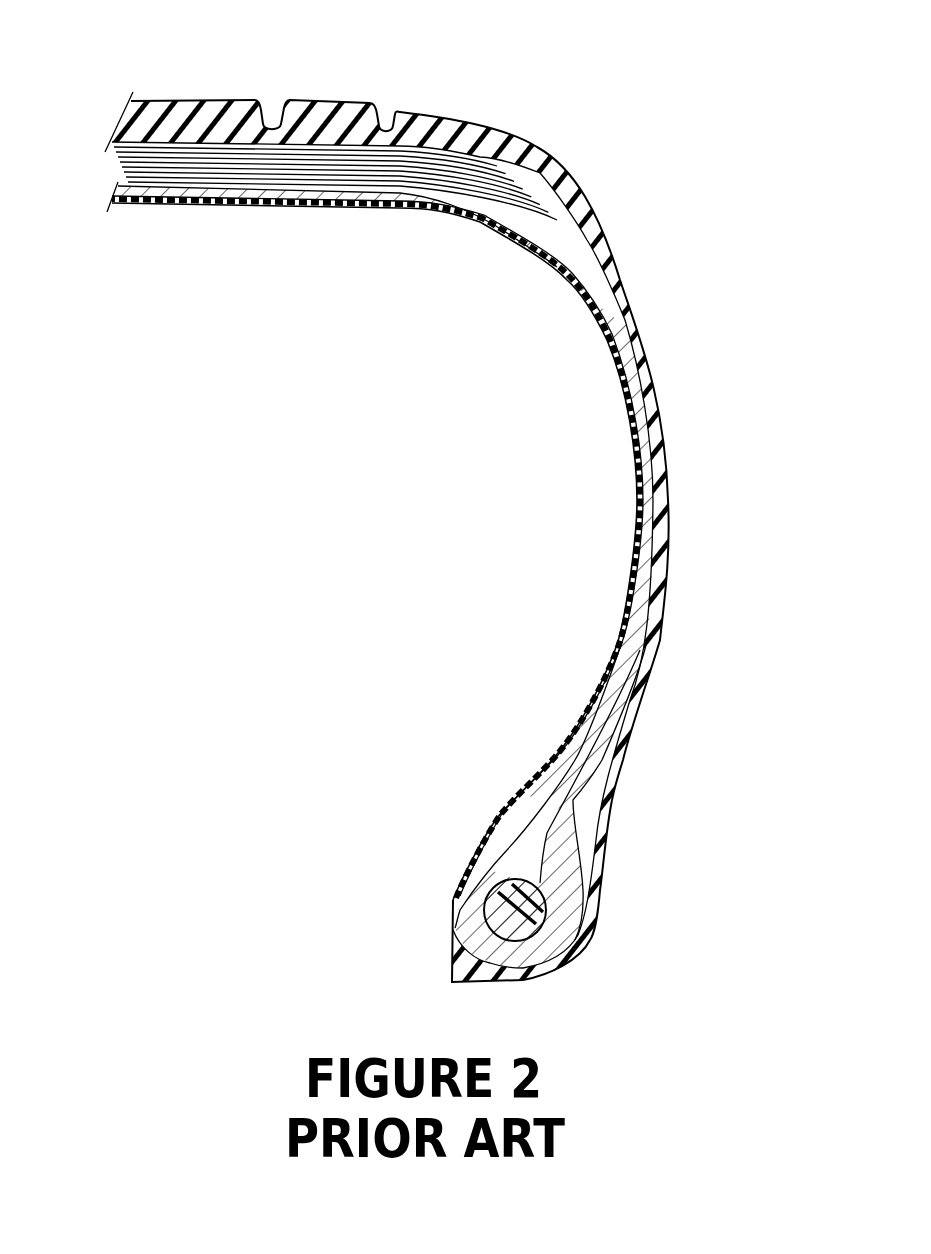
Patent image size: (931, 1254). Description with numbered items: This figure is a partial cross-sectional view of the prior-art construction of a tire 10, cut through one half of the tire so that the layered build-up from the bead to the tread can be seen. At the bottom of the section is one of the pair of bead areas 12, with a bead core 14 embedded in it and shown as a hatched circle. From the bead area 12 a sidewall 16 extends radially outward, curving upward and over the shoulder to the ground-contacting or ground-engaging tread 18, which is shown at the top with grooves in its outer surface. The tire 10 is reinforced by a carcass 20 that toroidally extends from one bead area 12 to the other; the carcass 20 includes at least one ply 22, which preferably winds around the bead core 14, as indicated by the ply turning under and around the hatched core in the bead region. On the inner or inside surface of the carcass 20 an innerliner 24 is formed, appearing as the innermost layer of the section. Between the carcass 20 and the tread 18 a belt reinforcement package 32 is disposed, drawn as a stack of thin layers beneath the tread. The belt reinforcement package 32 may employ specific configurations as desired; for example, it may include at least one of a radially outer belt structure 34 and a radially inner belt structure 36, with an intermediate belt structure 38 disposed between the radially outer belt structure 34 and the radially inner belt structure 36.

The tire 10 is at (617, 248).
The bead area 12 is at (497, 818).
The bead core 14 is at (518, 925).
The sidewall 16 is at (670, 478).
The tread 18 is at (343, 103).
The carcass 20 is at (623, 420).
The ply 22 is at (641, 385).
The innerliner 24 is at (607, 338).
The belt reinforcement package 32 is at (412, 155).
The radially outer belt structure 34 is at (490, 168).
The radially inner belt structure 36 is at (458, 204).
The intermediate belt structure 38 is at (530, 200).